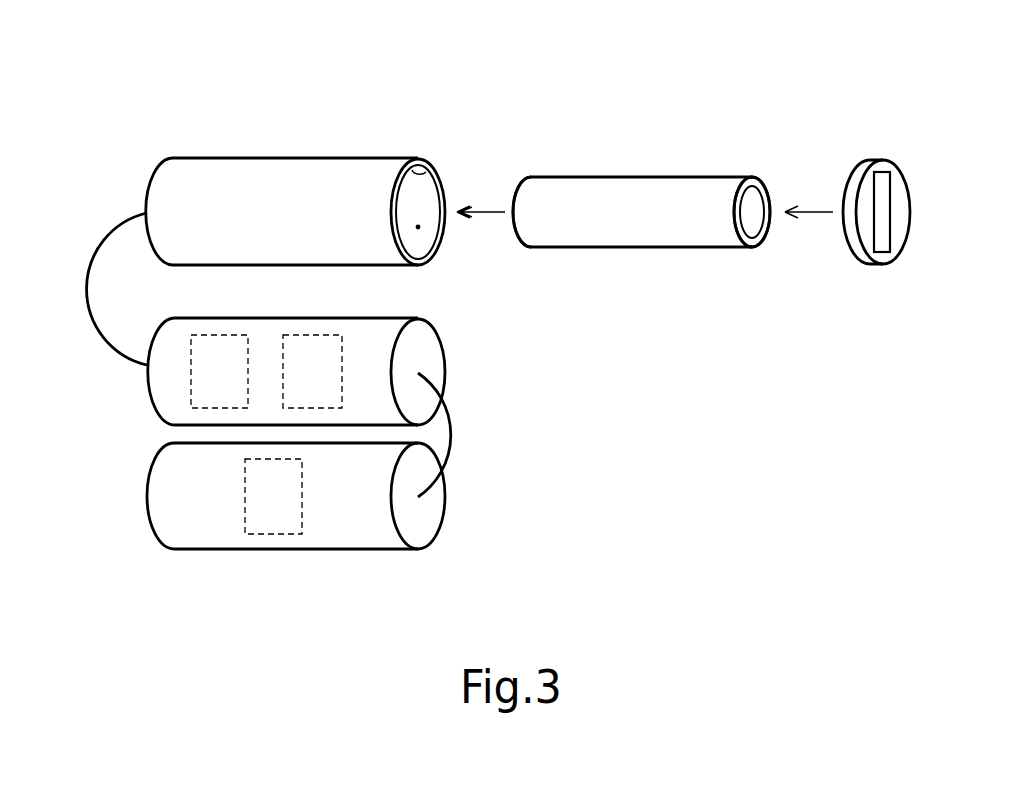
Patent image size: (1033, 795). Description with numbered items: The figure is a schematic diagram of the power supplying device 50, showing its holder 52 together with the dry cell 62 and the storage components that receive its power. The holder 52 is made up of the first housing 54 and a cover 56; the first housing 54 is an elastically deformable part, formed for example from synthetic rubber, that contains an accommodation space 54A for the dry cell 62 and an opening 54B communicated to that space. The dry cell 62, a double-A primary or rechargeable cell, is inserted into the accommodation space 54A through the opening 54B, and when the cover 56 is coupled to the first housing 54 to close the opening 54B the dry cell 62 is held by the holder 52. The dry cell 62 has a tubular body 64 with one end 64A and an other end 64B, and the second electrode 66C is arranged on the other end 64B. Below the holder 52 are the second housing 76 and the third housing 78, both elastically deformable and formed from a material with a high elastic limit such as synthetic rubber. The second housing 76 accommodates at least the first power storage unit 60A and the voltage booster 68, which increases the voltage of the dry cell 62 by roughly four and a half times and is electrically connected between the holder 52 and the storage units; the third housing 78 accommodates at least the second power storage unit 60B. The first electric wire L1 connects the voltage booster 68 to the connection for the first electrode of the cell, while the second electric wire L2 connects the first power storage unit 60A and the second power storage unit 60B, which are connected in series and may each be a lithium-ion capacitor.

The power supplying device 50 is at (720, 64).
The holder 52 is at (174, 88).
The first housing 54 is at (305, 158).
The accommodation space 54A is at (418, 227).
The opening 54B is at (415, 170).
The cover 56 is at (877, 160).
The dry cell 62 is at (727, 289).
The body 64 is at (672, 177).
The one end 64A is at (513, 187).
The other end 64B is at (770, 187).
The second electrode 66C is at (757, 213).
The voltage booster 68 is at (219, 335).
The first power storage unit 60A is at (311, 335).
The second power storage unit 60B is at (272, 535).
The second housing 76 is at (430, 318).
The third housing 78 is at (430, 443).
The first electric wire L1 is at (85, 294).
The second electric wire L2 is at (537, 432).